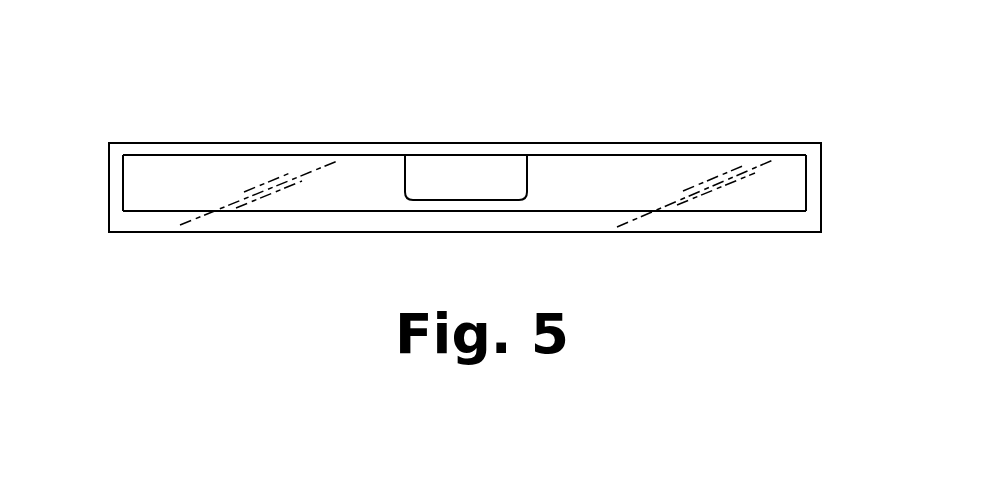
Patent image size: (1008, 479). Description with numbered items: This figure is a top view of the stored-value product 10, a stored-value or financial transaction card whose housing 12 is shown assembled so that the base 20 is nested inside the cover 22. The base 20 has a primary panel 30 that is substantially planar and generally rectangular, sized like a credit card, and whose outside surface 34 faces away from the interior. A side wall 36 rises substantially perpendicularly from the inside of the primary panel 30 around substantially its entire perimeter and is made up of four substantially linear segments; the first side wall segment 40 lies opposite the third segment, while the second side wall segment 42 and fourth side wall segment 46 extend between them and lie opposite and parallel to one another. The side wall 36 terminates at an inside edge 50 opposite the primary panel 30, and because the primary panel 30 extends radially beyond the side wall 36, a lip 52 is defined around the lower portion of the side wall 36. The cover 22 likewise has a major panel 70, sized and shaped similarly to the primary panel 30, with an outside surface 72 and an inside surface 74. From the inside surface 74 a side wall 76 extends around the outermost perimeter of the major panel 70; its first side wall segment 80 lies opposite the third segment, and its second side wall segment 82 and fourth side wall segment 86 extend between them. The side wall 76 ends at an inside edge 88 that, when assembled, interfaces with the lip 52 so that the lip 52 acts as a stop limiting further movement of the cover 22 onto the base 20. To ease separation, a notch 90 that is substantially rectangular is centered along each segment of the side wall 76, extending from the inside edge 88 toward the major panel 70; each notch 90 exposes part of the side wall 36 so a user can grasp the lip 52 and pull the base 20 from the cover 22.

The stored-value product 10 is at (188, 80).
The housing 12 is at (96, 136).
The base 20 is at (703, 128).
The cover 22 is at (769, 248).
The primary panel 30 is at (796, 143).
The outside surface 34 is at (293, 143).
The side wall 36 is at (417, 170).
The first side wall segment 40 is at (465, 185).
The second side wall segment 42 is at (806, 200).
The fourth side wall segment 46 is at (120, 181).
The inside edge 50 is at (295, 213).
The lip 52 is at (496, 161).
The major panel 70 is at (648, 233).
The outside surface 72 is at (479, 233).
The inside surface 74 is at (569, 200).
The side wall 76 is at (160, 215).
The first side wall segment 80 is at (372, 190).
The second side wall segment 82 is at (821, 222).
The fourth side wall segment 86 is at (105, 217).
The inside edge 88 is at (618, 143).
The notch 90 is at (442, 195).